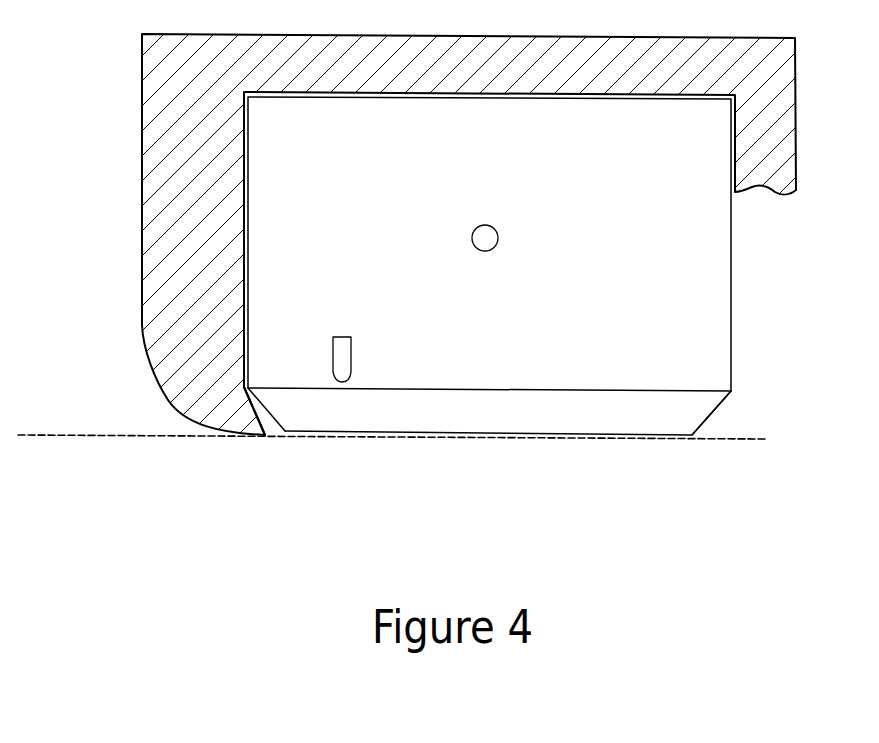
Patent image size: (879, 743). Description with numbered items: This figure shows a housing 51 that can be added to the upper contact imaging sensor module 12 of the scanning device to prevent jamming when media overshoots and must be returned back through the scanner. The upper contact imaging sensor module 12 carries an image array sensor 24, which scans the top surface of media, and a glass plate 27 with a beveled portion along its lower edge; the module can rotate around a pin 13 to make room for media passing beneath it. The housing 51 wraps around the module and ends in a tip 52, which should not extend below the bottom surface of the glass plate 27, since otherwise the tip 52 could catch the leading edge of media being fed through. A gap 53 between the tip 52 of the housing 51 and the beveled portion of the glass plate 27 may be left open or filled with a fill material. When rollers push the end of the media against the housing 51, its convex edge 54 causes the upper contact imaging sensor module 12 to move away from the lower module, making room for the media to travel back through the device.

The upper contact imaging sensor module 12 is at (725, 278).
The pin 13 is at (498, 230).
The image array sensor 24 is at (352, 342).
The glass plate 27 is at (707, 410).
The housing 51 is at (142, 192).
The tip 52 is at (267, 438).
The gap 53 is at (270, 425).
The convex edge 54 is at (170, 397).